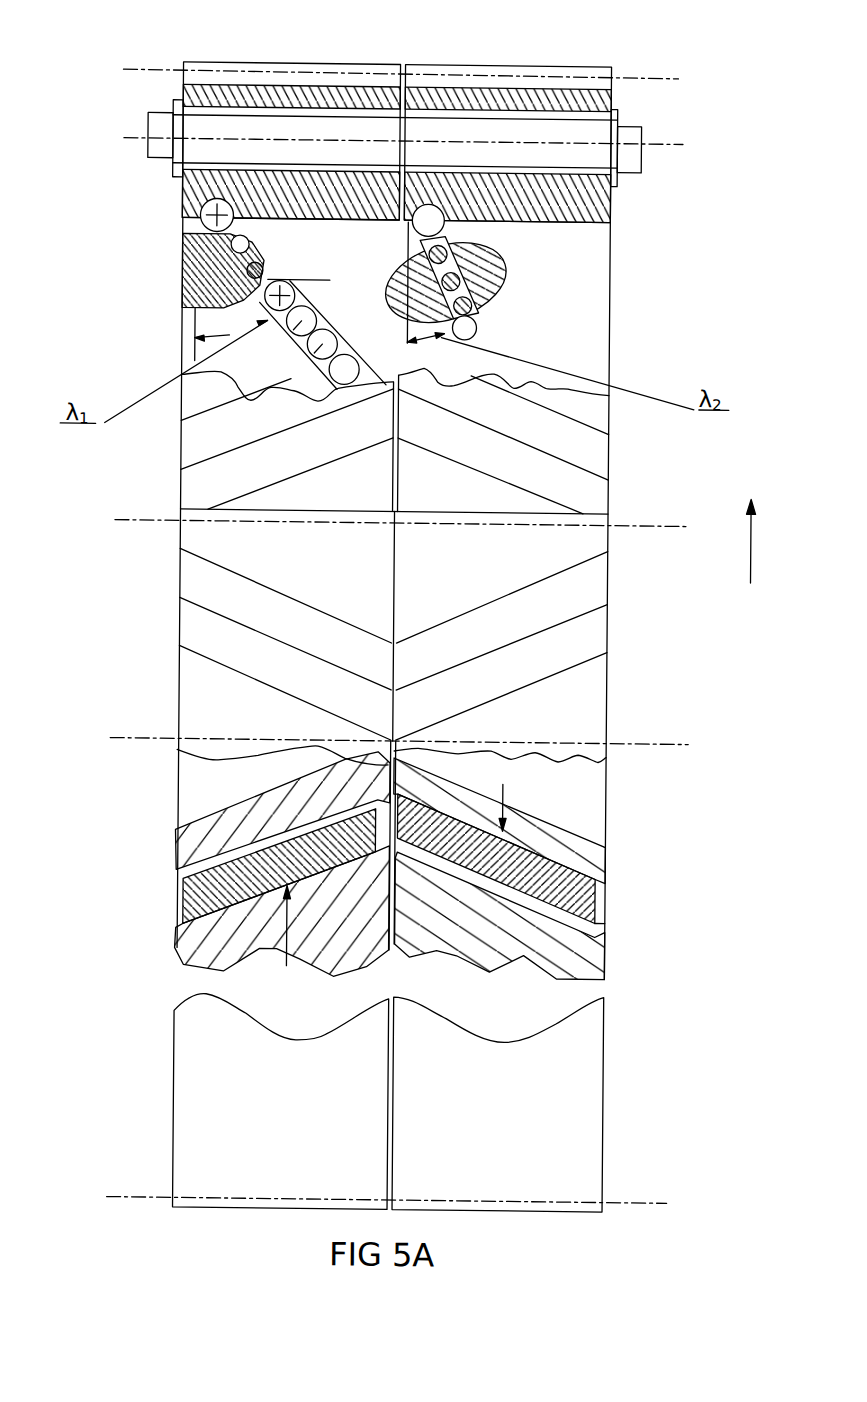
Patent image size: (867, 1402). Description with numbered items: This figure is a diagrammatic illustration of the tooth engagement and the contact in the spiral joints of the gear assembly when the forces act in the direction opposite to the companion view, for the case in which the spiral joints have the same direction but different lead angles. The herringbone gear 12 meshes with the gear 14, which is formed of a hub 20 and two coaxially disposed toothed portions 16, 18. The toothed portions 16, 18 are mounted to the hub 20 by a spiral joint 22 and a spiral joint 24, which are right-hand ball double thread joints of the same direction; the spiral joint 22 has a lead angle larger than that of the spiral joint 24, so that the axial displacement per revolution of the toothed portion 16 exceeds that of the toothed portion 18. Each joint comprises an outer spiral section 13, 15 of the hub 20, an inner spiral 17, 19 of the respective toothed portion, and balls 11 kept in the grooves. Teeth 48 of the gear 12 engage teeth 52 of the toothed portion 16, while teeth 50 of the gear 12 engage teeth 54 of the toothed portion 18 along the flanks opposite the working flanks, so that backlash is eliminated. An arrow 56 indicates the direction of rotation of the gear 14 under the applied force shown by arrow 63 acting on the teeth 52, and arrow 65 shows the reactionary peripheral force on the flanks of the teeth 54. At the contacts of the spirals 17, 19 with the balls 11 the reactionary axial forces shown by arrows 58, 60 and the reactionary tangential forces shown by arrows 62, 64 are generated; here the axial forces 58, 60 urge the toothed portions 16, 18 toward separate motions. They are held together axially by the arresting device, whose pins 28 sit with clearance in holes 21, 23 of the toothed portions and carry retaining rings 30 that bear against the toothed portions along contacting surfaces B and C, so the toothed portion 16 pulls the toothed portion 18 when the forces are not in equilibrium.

The balls 11 is at (209, 388).
The herringbone gear 12 is at (454, 599).
The outer spiral section 13 is at (149, 202).
The gear 14 is at (415, 1135).
The outer spiral section 15 is at (565, 144).
The toothed portion 16 is at (222, 1101).
The inner spiral 17 is at (232, 145).
The toothed portion 18 is at (558, 1104).
The inner spiral 19 is at (486, 129).
The hub 20 is at (565, 445).
The hole 21 is at (124, 121).
The spiral joint 22 is at (198, 440).
The hole 23 is at (669, 114).
The spiral joint 24 is at (568, 284).
The pin 28 is at (404, 91).
The retaining ring 30 is at (234, 86).
The teeth 48 is at (223, 807).
The teeth 50 is at (564, 868).
The teeth 52 is at (216, 865).
The teeth 54 is at (562, 947).
The arrow 56 is at (736, 541).
The arrow 58 is at (223, 331).
The arrow 60 is at (500, 179).
The arrow 62 is at (164, 268).
The arrow 63 is at (223, 909).
The arrow 64 is at (575, 279).
The arrow 65 is at (562, 816).
The contacting surface B is at (374, 604).
The contacting surface C is at (418, 746).